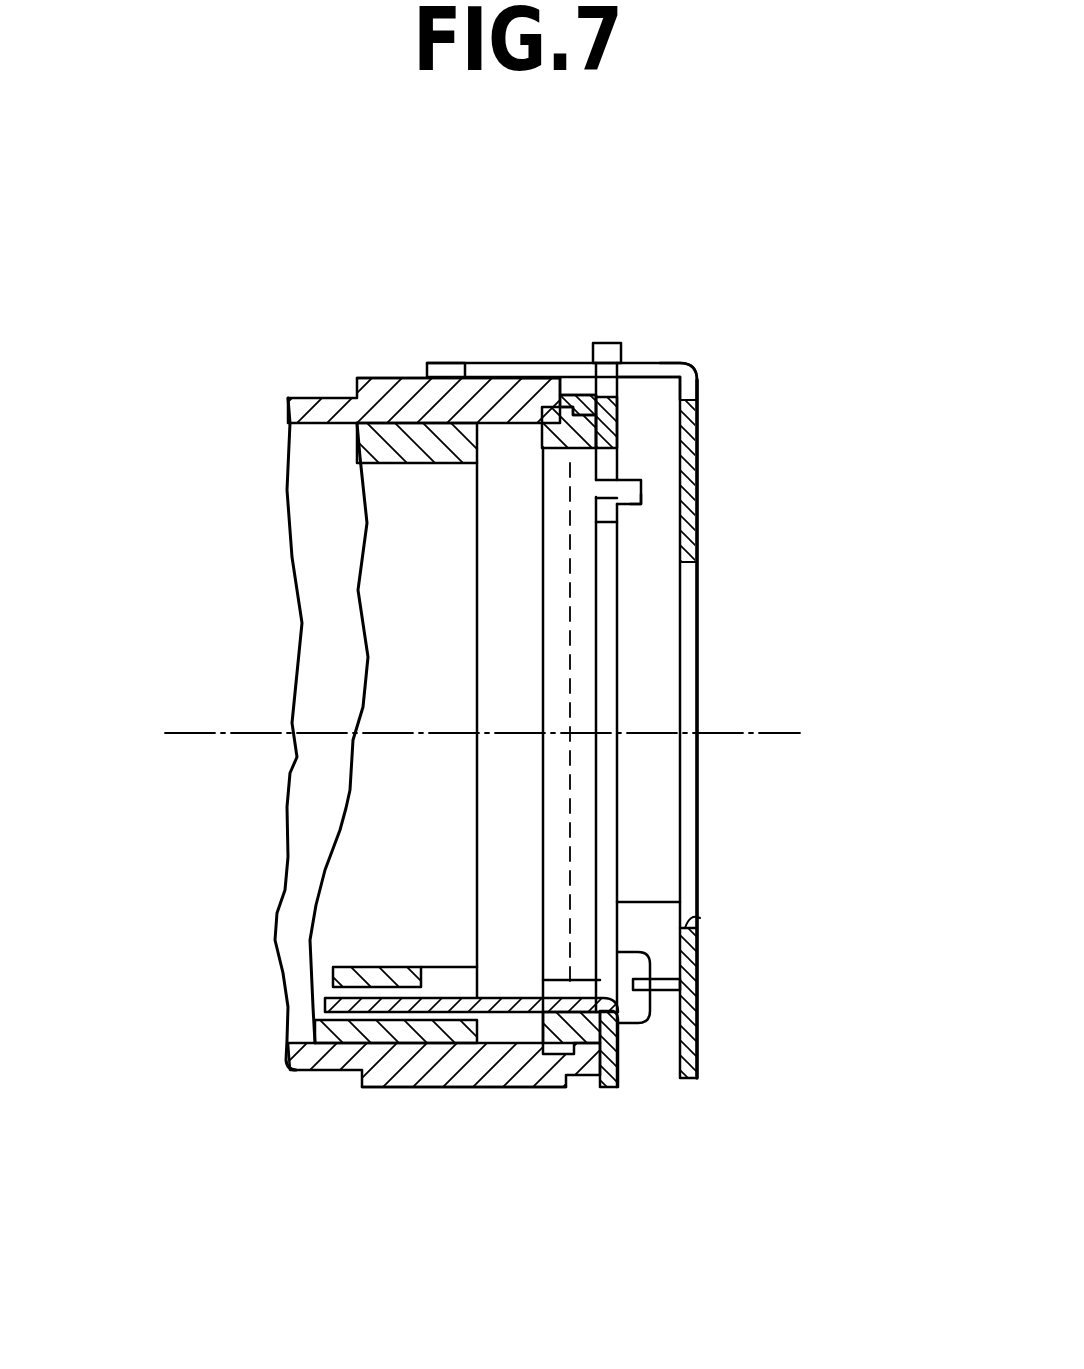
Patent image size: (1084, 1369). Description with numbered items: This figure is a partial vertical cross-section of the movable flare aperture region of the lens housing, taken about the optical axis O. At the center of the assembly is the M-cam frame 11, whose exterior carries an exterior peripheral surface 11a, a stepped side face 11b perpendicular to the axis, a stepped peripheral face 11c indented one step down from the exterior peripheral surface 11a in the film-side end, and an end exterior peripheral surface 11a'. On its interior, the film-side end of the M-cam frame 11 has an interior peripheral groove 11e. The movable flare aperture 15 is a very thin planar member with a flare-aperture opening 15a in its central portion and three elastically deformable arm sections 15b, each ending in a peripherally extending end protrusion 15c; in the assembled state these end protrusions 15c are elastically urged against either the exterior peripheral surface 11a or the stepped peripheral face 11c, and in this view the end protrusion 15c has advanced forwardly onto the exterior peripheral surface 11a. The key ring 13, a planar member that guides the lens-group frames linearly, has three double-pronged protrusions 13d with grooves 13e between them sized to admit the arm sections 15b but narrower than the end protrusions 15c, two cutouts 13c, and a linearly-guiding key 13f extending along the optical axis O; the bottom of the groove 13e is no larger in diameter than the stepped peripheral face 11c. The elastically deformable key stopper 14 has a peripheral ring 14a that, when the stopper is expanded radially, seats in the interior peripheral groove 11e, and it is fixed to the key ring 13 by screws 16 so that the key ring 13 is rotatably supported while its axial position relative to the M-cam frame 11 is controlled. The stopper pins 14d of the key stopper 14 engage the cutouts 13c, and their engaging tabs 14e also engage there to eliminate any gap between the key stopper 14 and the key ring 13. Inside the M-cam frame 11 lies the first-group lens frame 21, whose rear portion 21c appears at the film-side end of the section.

The M-cam frame 11 is at (297, 398).
The exterior peripheral surface 11a is at (425, 304).
The stepped side face 11b is at (565, 377).
The end exterior peripheral surface 11a' is at (603, 272).
The stepped peripheral face 11c is at (585, 395).
The interior peripheral groove 11e is at (452, 1161).
The key ring 13 is at (610, 835).
The cutout 13c is at (596, 498).
The double-pronged protrusion 13d is at (628, 350).
The groove 13e is at (620, 396).
The linearly-guiding key 13f is at (375, 967).
The key stopper 14 is at (585, 782).
The peripheral ring 14a is at (525, 1088).
The stopper pin 14d is at (641, 483).
The engaging tab 14e is at (642, 505).
The movable flare aperture 15 is at (703, 822).
The opening 15a is at (700, 920).
The arm section 15b is at (700, 372).
The end protrusion 15c is at (445, 363).
The screw 16 is at (640, 1025).
The group-1 lens frame 21 is at (360, 462).
The rear portion of lens frame 21c is at (457, 1027).
The optical axis O is at (197, 733).